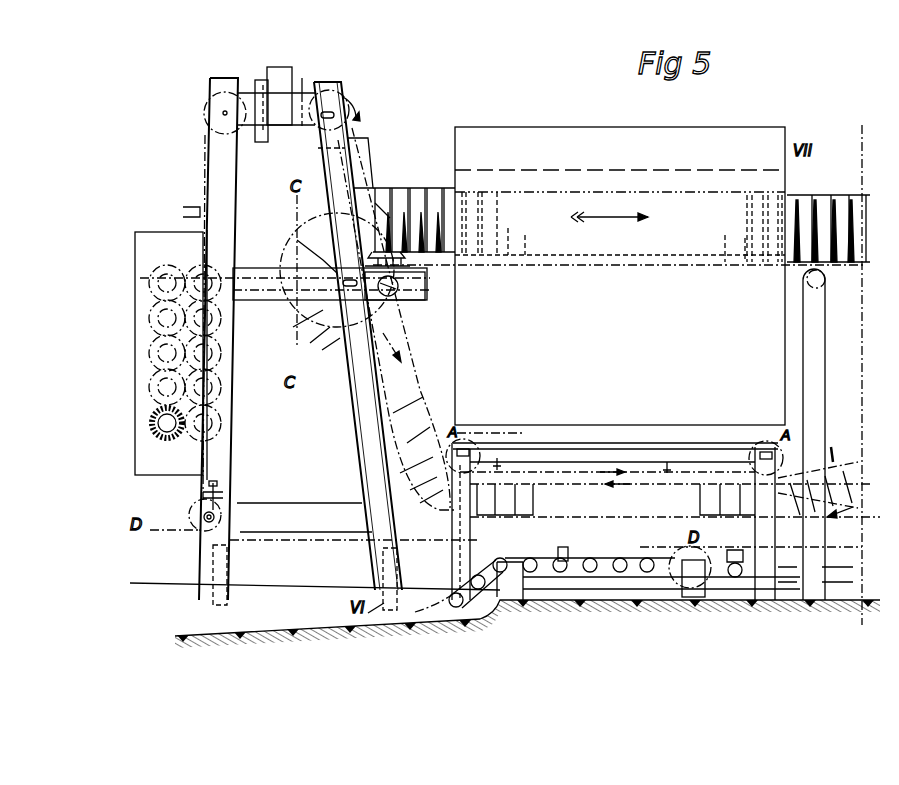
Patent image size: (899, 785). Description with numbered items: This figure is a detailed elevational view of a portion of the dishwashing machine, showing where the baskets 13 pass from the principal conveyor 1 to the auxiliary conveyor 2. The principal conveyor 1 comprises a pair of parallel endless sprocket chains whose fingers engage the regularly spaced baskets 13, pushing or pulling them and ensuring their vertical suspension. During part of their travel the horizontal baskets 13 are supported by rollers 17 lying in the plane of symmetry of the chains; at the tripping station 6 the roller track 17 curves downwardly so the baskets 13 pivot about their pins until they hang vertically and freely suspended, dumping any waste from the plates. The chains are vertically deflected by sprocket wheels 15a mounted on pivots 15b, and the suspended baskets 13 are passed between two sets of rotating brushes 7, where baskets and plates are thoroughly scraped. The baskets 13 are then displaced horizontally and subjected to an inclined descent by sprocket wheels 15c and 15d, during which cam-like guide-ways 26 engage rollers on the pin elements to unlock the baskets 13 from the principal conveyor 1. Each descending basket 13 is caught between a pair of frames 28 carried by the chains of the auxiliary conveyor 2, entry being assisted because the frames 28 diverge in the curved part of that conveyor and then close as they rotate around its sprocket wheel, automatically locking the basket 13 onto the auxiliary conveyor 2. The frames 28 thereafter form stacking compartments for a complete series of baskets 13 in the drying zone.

The principal conveyor 1 is at (408, 381).
The auxiliary conveyor 2 is at (575, 480).
The tripping station 6 is at (449, 521).
The rotating brushes 7 is at (160, 420).
The basket 13 is at (805, 196).
The sprocket wheels 15a is at (232, 507).
The pivots 15b is at (207, 525).
The sprocket wheel 15c is at (213, 106).
The sprocket wheel 15d is at (340, 103).
The rollers 17 is at (590, 560).
The guide-ways 26 is at (368, 164).
The frames 28 is at (404, 214).